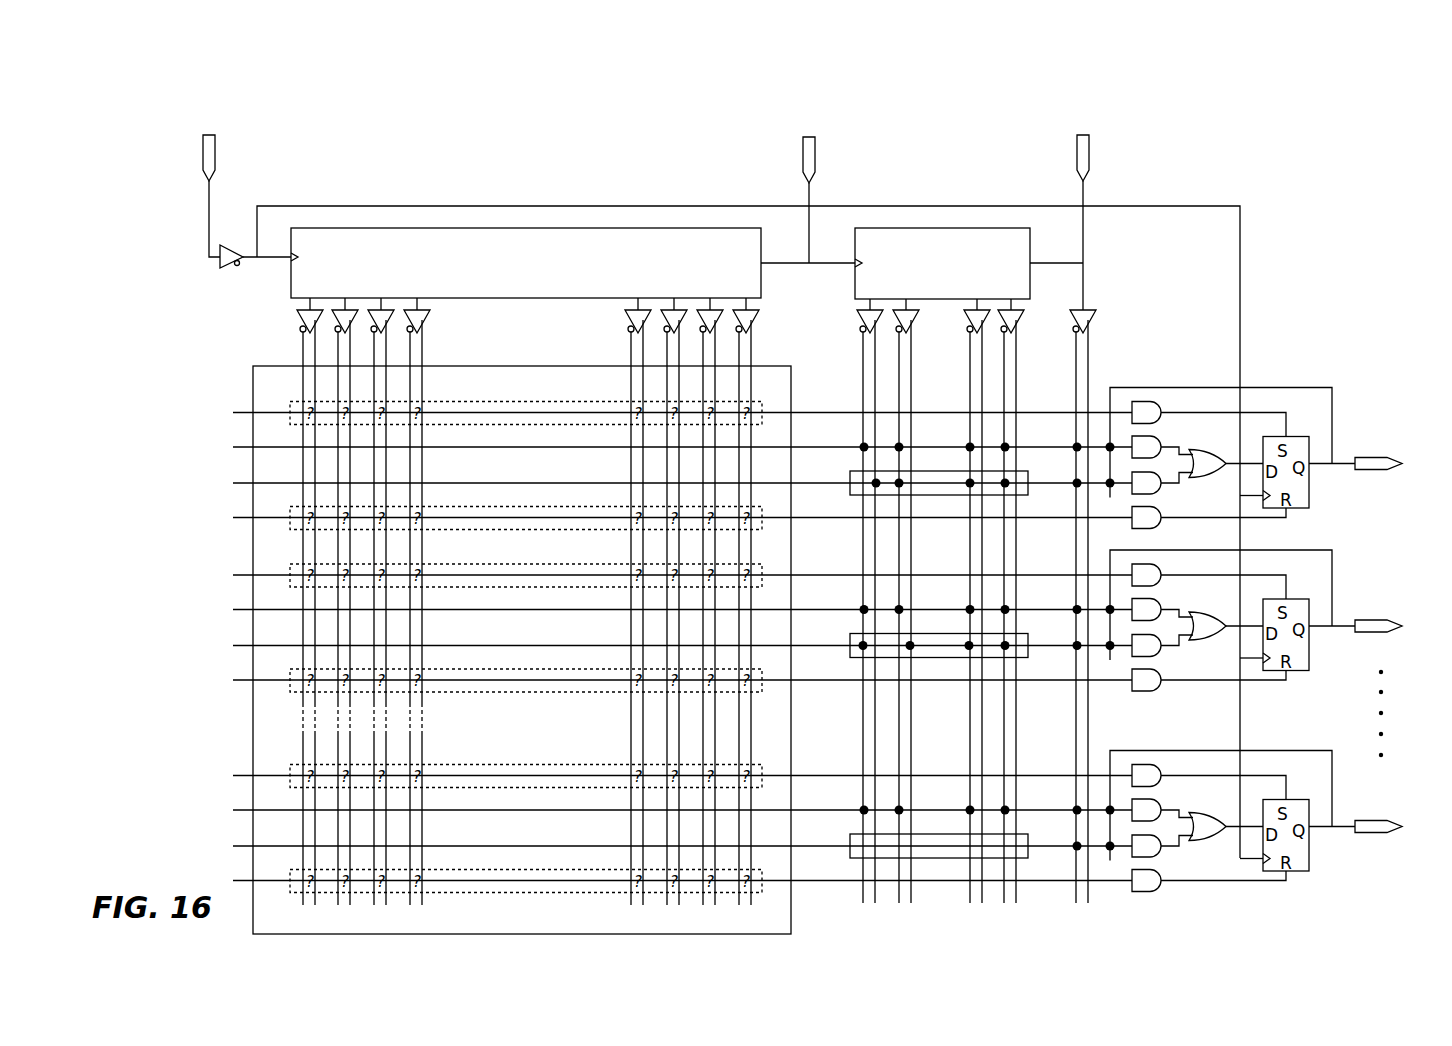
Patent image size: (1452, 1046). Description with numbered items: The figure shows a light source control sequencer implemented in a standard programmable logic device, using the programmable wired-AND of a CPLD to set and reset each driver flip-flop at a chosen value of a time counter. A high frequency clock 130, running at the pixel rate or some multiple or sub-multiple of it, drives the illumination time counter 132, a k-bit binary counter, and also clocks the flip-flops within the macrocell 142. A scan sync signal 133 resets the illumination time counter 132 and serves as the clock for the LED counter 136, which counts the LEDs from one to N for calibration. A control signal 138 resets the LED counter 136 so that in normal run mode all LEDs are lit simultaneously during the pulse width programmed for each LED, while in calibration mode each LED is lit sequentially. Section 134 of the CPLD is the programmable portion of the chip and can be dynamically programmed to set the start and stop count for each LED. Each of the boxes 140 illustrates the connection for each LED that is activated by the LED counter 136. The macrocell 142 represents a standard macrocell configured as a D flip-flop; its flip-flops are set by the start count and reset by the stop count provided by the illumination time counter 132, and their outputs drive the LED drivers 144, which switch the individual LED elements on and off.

The clock 130 is at (203, 150).
The illumination time counter 132 is at (471, 228).
The scan sync signal 133 is at (815, 155).
The section of the CPLD 134 is at (253, 388).
The LED counter 136 is at (905, 228).
The control signal 138 is at (1089, 162).
The boxes 140 is at (941, 897).
The macrocell 142 is at (1263, 340).
The LED drivers 144 is at (1379, 406).